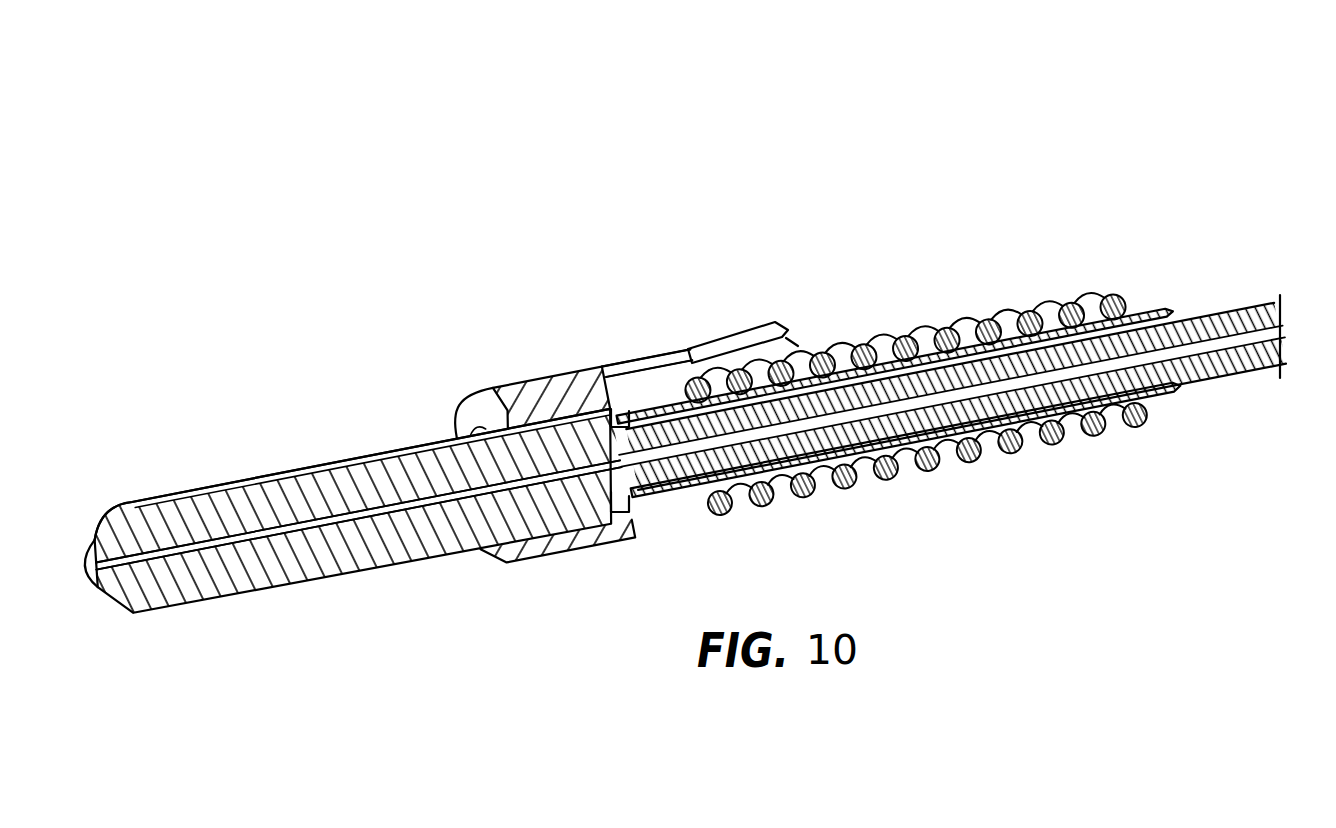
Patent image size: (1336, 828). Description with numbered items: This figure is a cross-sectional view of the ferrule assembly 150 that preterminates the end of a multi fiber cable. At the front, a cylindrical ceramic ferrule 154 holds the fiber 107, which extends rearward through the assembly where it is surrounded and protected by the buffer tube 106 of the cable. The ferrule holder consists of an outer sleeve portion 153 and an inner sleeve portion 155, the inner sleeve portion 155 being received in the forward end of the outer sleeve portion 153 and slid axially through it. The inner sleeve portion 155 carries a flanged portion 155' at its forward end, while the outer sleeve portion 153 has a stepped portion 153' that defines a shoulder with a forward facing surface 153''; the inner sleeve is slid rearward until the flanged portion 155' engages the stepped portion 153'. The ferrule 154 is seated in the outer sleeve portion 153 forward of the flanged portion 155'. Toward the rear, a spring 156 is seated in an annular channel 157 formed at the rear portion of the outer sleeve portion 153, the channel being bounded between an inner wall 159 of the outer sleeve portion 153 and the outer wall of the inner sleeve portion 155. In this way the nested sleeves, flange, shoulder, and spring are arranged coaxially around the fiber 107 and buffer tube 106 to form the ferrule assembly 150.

The buffer tube 106 is at (1217, 327).
The fiber 107 is at (303, 530).
The ferrule assembly 150 is at (663, 208).
The outer sleeve portion 153 is at (586, 367).
The stepped portion 153' is at (902, 448).
The forward facing surface 153'' is at (728, 313).
The ferrule 154 is at (287, 465).
The inner sleeve portion 155 is at (927, 483).
The flanged portion 155' is at (674, 383).
The spring 156 is at (928, 338).
The annular channel 157 is at (760, 347).
The inner wall 159 is at (800, 330).